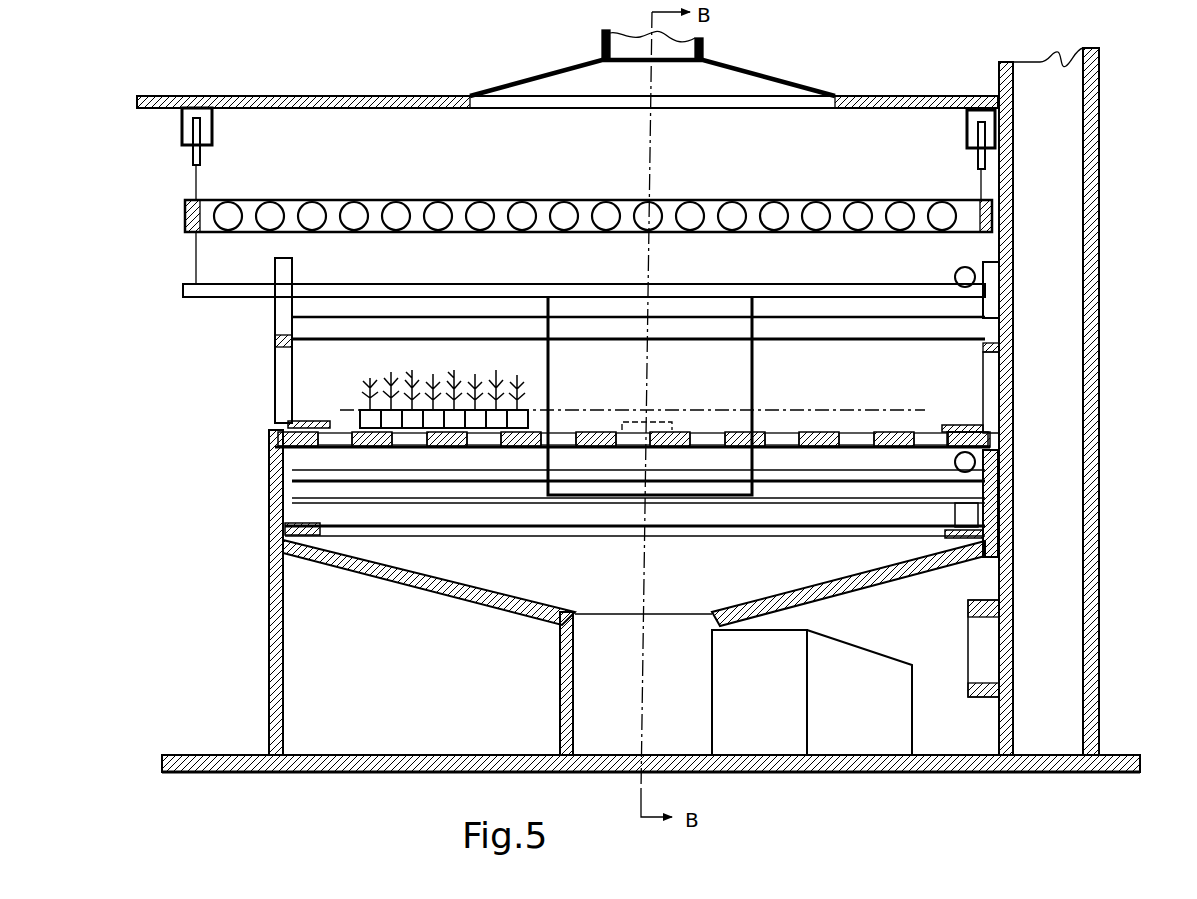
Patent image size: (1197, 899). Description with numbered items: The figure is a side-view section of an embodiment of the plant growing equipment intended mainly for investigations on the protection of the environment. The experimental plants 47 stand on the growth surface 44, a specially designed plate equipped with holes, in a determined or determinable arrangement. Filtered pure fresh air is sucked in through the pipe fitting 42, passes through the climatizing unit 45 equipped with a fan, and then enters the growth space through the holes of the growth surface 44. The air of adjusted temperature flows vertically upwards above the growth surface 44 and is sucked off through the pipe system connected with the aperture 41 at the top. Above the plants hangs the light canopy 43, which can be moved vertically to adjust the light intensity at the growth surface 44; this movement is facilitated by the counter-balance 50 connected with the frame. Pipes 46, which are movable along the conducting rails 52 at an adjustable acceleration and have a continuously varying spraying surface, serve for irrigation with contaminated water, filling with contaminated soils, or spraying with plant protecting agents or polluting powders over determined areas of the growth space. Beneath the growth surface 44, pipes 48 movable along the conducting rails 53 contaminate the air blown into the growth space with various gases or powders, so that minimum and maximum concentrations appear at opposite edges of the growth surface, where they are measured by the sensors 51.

The aperture 41 is at (678, 53).
The pipe fitting 42 is at (1042, 127).
The light canopy 43 is at (953, 205).
The growth surface 44 is at (367, 445).
The climatizing unit 45 is at (752, 702).
The pipes 46 is at (985, 332).
The experimental plants 47 is at (373, 417).
The pipes 48 is at (957, 515).
The counter-balance 50 is at (575, 365).
The sensors 51 is at (973, 423).
The conducting rails 52 is at (290, 302).
The conducting rails 53 is at (347, 477).